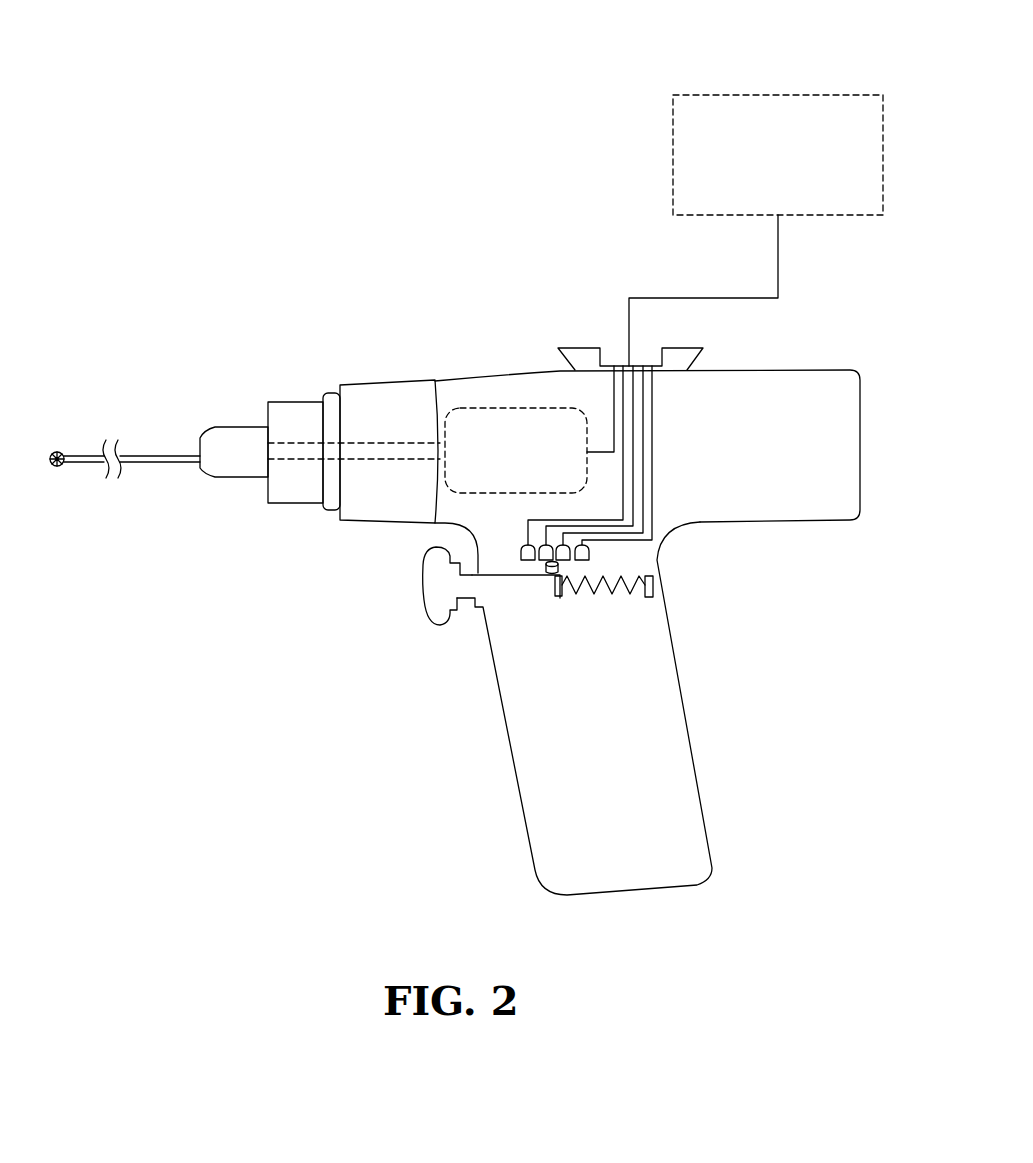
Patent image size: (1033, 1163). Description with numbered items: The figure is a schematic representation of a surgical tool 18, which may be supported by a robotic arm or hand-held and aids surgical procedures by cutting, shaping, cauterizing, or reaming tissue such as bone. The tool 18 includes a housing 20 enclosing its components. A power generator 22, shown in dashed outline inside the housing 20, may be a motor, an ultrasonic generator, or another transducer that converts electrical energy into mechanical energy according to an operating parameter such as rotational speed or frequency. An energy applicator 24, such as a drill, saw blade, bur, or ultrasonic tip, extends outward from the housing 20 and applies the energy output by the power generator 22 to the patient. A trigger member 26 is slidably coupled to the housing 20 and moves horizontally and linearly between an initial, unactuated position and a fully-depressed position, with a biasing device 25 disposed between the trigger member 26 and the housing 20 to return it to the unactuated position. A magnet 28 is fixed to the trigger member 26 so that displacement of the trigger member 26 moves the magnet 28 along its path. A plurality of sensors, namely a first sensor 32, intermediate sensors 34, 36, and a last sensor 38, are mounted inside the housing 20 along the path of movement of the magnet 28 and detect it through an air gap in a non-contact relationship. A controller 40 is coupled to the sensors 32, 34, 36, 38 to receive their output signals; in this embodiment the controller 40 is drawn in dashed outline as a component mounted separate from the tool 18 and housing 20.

The tool 18 is at (466, 458).
The housing 20 is at (518, 378).
The power generator 22 is at (490, 408).
The energy applicator 24 is at (163, 455).
The biasing device 25 is at (633, 590).
The trigger member 26 is at (426, 619).
The magnet 28 is at (553, 575).
The first sensor 32 is at (520, 555).
The intermediate sensor 34 is at (544, 470).
The intermediate sensor 36 is at (568, 567).
The last sensor 38 is at (590, 555).
The controller 40 is at (775, 95).